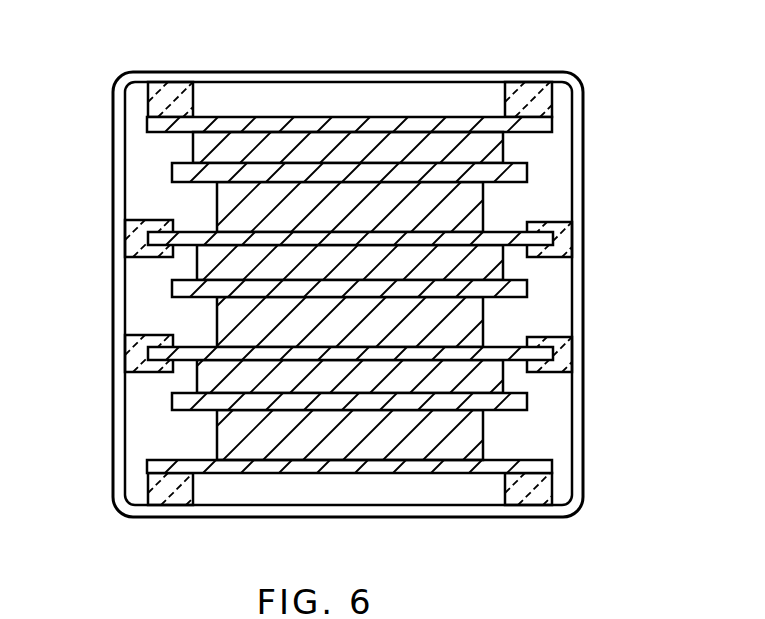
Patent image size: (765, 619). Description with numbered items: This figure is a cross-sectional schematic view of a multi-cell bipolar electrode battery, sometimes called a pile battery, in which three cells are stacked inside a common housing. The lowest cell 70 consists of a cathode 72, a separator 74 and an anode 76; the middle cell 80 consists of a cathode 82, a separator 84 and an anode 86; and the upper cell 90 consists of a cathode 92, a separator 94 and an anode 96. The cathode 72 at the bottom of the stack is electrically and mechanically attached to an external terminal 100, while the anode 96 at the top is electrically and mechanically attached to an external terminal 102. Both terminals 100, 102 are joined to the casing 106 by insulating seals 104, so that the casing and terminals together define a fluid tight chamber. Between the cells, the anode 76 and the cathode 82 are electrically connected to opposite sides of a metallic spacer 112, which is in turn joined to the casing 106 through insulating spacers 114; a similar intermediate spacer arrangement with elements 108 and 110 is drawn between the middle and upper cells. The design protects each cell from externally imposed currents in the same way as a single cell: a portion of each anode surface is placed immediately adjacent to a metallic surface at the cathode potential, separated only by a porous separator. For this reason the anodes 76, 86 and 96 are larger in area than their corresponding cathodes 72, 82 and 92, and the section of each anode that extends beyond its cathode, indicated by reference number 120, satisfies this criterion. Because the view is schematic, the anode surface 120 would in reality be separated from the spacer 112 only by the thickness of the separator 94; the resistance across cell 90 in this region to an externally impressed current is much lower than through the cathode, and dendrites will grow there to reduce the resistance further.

The cell 70 is at (349, 424).
The cathode 72 is at (215, 435).
The separator 74 is at (349, 400).
The anode 76 is at (490, 387).
The cell 80 is at (349, 300).
The cathode 82 is at (217, 316).
The separator 84 is at (349, 275).
The anode 86 is at (493, 270).
The cell 90 is at (349, 182).
The cathode 92 is at (215, 200).
The separator 94 is at (349, 157).
The anode 96 is at (493, 150).
The external terminal 100 is at (345, 470).
The external terminal 102 is at (352, 123).
The insulating seal 104 is at (176, 81).
The casing 106 is at (116, 490).
The intermediate terminal 108 is at (349, 353).
The intermediate terminal 110 is at (556, 356).
The metallic spacer 112 is at (350, 237).
The insulating spacer 114 is at (556, 236).
The anode surface 120 is at (203, 137).